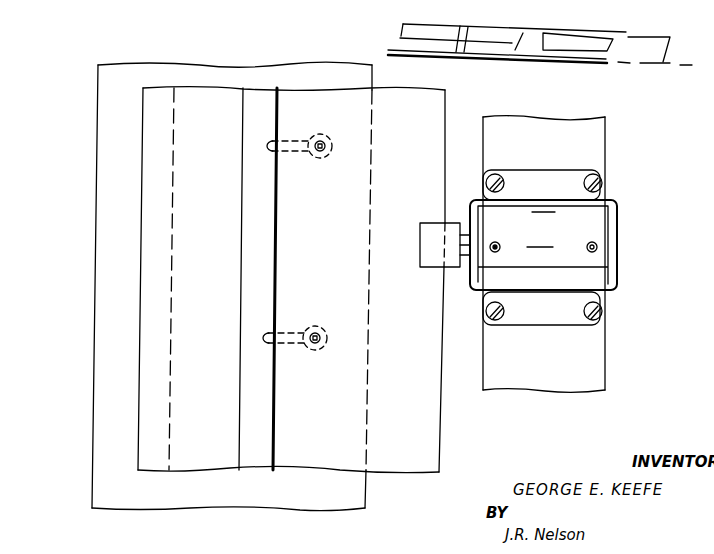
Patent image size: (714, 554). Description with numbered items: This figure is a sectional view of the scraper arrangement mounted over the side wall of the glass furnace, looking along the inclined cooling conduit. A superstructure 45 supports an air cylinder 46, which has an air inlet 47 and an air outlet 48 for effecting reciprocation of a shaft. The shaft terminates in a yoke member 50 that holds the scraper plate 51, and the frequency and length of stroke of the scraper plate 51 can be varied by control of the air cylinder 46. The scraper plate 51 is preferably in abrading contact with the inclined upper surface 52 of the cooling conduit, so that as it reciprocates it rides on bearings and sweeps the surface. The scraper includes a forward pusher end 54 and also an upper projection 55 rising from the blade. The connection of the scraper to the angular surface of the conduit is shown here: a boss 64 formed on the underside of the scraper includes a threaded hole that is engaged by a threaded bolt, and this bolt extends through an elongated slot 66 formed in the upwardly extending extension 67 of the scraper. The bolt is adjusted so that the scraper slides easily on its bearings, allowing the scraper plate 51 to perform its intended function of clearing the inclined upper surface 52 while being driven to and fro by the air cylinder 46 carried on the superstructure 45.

The superstructure 45 is at (592, 163).
The air cylinder 46 is at (597, 223).
The air inlet 47 is at (519, 227).
The air outlet 48 is at (592, 241).
The yoke member 50 is at (433, 228).
The scraper plate 51 is at (445, 417).
The inclined upper surface 52 is at (152, 498).
The forward pusher end 54 is at (140, 319).
The upper projection 55 is at (253, 461).
The boss 64 is at (320, 165).
The elongated slot 66 is at (293, 140).
The upwardly extending extension 67 is at (366, 495).